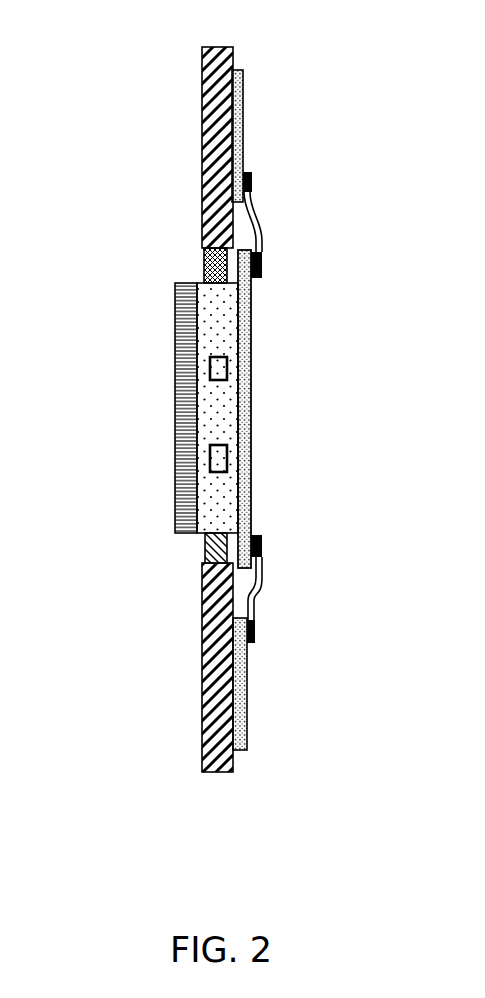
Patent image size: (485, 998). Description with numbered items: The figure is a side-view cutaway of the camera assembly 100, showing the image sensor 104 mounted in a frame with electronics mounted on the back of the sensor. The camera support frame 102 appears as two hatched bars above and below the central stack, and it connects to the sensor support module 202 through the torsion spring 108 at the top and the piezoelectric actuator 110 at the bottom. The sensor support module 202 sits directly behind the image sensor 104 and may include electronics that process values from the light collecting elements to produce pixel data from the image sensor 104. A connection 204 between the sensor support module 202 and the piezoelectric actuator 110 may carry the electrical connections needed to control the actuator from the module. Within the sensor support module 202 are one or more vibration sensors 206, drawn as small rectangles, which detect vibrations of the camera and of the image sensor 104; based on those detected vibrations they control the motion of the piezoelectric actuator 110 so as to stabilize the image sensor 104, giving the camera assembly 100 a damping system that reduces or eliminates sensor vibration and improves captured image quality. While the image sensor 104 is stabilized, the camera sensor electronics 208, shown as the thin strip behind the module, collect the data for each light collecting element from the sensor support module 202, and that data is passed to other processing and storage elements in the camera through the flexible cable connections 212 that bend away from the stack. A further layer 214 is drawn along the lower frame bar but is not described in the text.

The camera assembly 100 is at (238, 887).
The camera support frame 102 is at (202, 133).
The image sensor 104 is at (175, 421).
The torsion spring 108 is at (204, 270).
The piezoelectric actuator 110 is at (205, 555).
The sensor support module 202 is at (228, 309).
The connection 204 is at (245, 100).
The vibration sensor 206 is at (228, 368).
The camera sensor electronics 208 is at (252, 403).
The flexible cable connection 212 is at (260, 220).
The lower conductive layer 214 is at (248, 697).